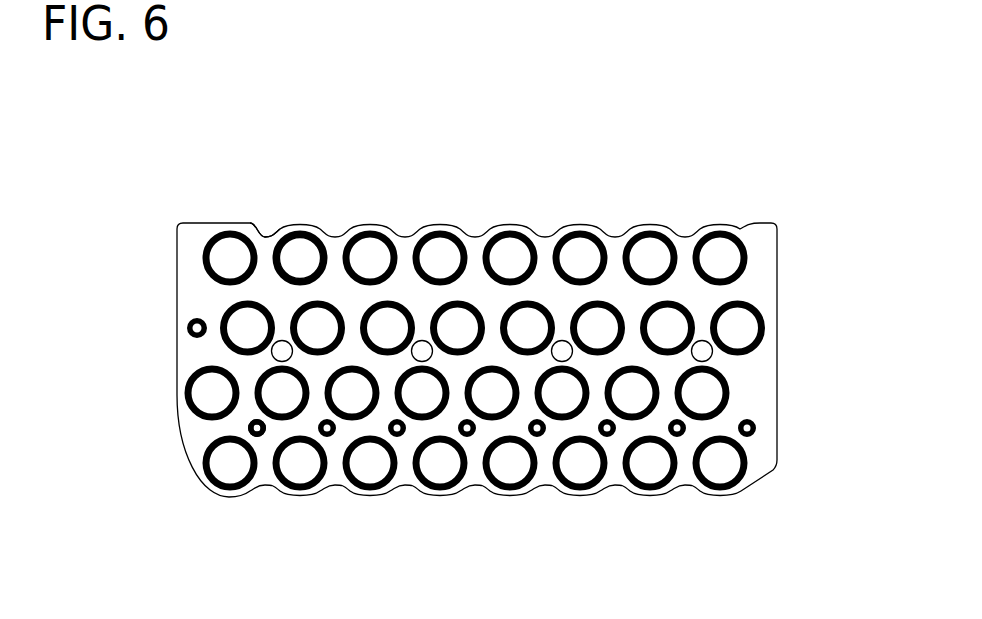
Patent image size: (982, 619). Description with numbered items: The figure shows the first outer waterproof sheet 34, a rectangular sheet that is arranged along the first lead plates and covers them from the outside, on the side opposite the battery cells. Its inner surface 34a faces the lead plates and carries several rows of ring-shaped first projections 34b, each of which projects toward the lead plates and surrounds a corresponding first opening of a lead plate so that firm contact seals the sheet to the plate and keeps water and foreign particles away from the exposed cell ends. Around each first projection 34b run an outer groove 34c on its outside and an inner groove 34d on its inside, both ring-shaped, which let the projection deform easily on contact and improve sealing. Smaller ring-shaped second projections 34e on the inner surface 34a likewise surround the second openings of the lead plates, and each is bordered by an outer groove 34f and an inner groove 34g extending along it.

The first outer waterproof sheet 34 is at (789, 154).
The inner surface 34a is at (762, 285).
The first projection 34b is at (300, 235).
The outer groove 34c is at (282, 232).
The inner groove 34d is at (304, 236).
The second projection 34e is at (232, 442).
The outer groove 34f is at (248, 427).
The inner groove 34g is at (259, 435).